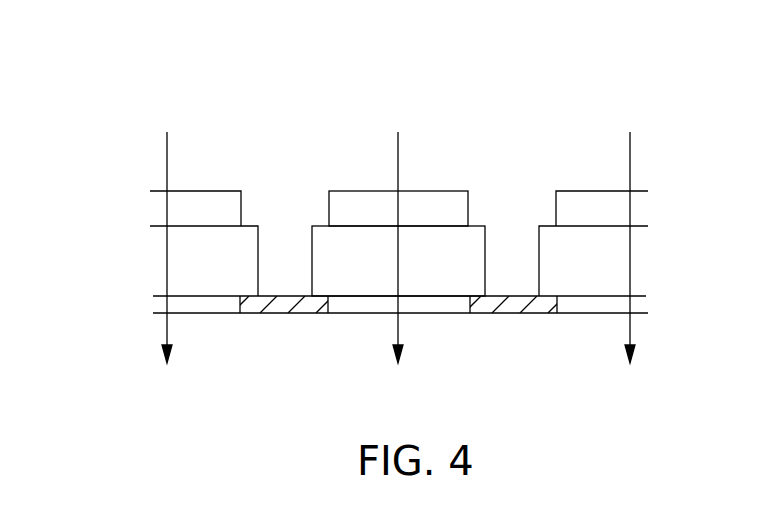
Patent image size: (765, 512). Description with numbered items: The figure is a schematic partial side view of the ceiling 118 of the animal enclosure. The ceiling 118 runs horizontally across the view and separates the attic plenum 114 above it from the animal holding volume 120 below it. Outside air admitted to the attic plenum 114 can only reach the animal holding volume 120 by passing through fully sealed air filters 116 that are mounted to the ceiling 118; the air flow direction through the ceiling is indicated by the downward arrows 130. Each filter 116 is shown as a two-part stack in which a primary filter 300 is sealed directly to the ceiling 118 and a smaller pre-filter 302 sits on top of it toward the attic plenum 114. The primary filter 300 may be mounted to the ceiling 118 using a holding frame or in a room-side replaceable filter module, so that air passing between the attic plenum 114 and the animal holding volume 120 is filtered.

The attic plenum 114 is at (352, 146).
The fully sealed air filters 116 is at (431, 165).
The ceiling 118 is at (487, 314).
The animal holding volume 120 is at (446, 415).
The arrows 130 is at (167, 323).
The primary filter 300 is at (372, 277).
The pre-filter 302 is at (383, 218).